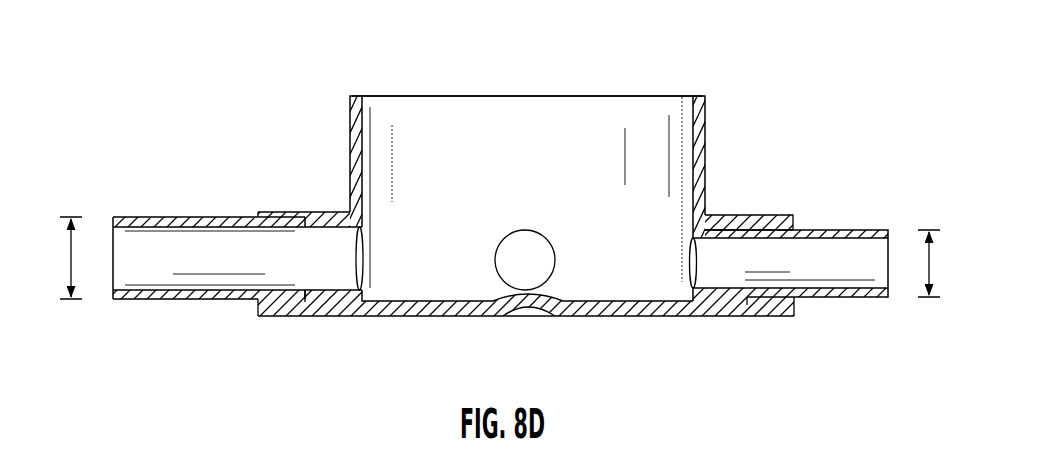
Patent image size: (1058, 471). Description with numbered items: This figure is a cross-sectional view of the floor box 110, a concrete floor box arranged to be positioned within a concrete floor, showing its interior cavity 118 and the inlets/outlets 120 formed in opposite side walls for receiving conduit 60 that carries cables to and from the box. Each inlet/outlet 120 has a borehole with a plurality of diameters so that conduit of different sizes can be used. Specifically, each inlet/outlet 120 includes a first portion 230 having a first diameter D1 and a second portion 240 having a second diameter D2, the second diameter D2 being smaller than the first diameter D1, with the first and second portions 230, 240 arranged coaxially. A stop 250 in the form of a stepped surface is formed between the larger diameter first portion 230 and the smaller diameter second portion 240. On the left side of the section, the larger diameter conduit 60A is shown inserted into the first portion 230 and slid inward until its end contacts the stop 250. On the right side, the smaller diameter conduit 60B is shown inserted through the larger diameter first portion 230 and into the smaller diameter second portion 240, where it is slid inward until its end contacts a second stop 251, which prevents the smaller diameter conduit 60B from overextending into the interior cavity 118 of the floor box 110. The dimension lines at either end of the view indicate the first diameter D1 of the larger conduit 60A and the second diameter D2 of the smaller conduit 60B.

The floor box 110 is at (709, 160).
The interior cavity 118 is at (641, 79).
The inlet/outlet 120 is at (320, 206).
The conduit 60 is at (511, 247).
The larger diameter conduit 60A is at (200, 212).
The smaller diameter conduit 60B is at (855, 226).
The stop 250 is at (361, 223).
The second stop 251 is at (357, 235).
The second portion 240 is at (345, 298).
The first portion 230 is at (273, 303).
The first diameter D1 is at (62, 258).
The second diameter D2 is at (942, 263).